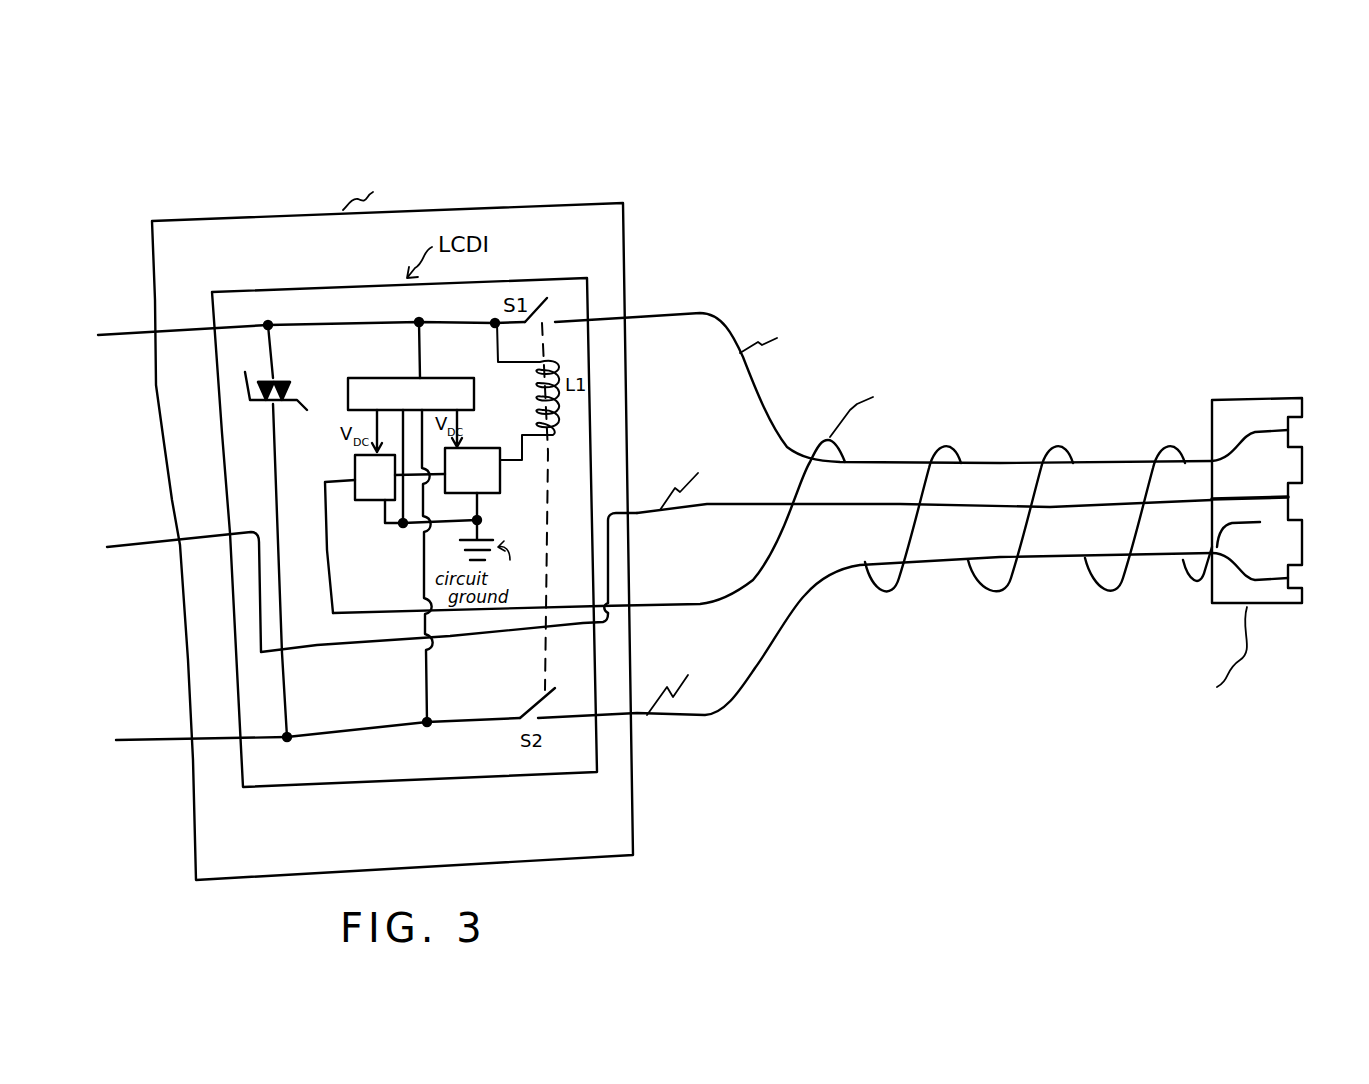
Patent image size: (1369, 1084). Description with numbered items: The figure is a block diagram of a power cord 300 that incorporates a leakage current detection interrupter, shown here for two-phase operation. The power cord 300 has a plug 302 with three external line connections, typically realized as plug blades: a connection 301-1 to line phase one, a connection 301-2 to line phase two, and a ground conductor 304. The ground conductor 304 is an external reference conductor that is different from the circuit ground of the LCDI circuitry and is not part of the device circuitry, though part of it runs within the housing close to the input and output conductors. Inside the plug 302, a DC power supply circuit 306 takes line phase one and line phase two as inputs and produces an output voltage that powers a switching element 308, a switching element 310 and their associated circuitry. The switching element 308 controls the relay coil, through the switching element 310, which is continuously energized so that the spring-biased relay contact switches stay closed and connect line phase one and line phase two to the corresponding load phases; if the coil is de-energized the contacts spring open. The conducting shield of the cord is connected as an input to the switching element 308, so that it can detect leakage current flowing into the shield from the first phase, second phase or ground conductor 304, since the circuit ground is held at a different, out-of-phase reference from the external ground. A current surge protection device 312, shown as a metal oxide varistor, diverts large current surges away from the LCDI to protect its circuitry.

The power cord 300 is at (735, 144).
The connection to line phase 1 301-1 is at (114, 340).
The connection to line phase 2 301-2 is at (151, 747).
The plug 302 is at (249, 210).
The ground conductor 304 is at (142, 553).
The DC power supply circuit 306 is at (368, 378).
The switching element 308 is at (345, 483).
The switching element 310 is at (472, 447).
The current surge protection device 312 is at (254, 408).